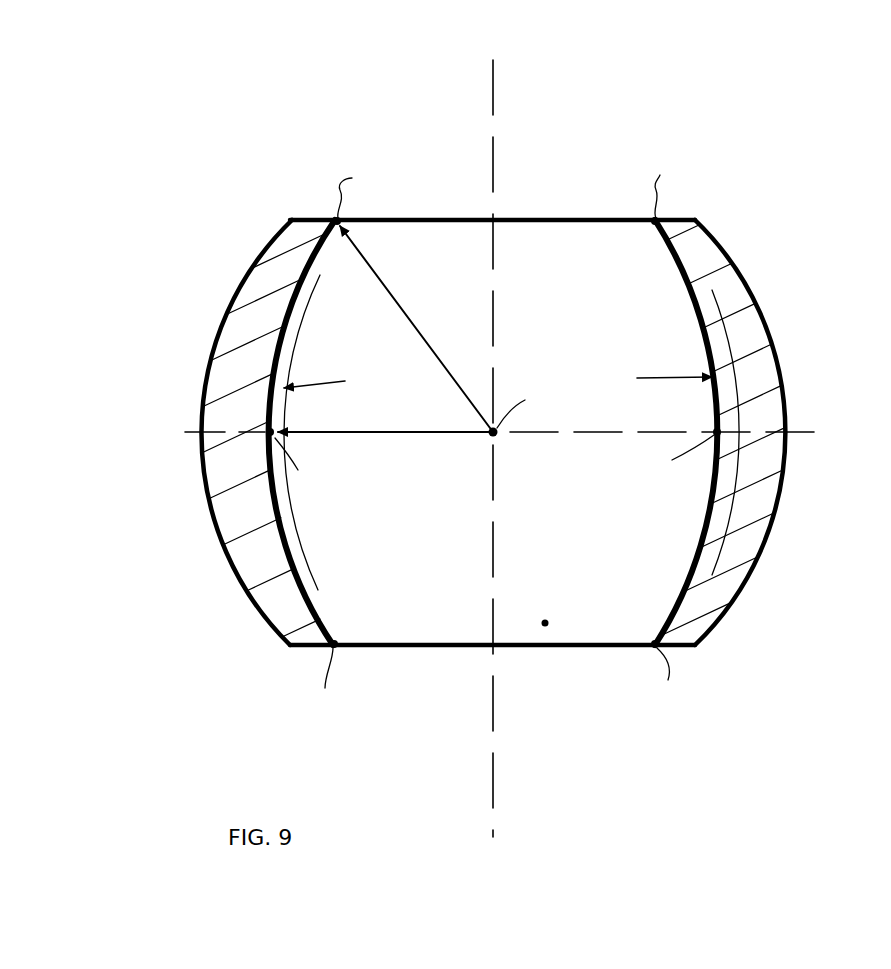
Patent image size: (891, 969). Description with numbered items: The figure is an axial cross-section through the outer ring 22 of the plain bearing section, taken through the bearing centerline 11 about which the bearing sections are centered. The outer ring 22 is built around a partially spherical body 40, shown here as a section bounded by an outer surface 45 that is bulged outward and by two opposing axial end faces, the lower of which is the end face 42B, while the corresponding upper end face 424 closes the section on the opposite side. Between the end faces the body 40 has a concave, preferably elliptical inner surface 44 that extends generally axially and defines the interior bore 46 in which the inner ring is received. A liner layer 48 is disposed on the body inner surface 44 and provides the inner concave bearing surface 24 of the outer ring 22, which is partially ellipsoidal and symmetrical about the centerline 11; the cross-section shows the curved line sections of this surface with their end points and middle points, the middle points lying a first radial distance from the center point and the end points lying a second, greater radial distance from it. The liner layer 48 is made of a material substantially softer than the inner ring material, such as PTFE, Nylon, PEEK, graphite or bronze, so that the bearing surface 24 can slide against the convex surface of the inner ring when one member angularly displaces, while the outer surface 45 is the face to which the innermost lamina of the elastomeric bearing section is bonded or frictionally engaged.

The bearing centerline 11 is at (494, 84).
The outer ring 22 is at (489, 440).
The inner concave bearing surface 24 is at (616, 622).
The partially spherical body 40 is at (224, 308).
The axial end face 42B is at (417, 648).
The top edge surface 424 is at (555, 220).
The inner surface 44 is at (282, 511).
The outer surface 45 is at (788, 368).
The interior bore 46 is at (545, 626).
The liner layer 48 is at (284, 365).